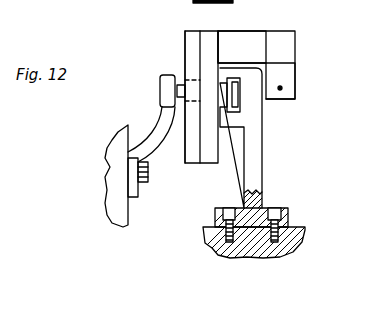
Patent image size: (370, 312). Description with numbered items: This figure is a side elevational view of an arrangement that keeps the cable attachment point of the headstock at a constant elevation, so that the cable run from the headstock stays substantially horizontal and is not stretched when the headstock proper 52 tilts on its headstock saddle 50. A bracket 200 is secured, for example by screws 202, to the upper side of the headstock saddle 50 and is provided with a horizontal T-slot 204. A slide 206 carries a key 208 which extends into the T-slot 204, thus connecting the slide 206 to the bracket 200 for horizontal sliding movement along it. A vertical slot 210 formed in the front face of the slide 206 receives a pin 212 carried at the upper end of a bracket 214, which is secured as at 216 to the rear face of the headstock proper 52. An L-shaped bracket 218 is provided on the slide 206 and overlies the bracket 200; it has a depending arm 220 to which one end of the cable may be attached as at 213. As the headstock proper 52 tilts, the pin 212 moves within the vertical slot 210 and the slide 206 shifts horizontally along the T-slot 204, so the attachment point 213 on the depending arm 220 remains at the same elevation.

The headstock saddle 50 is at (293, 251).
The headstock proper 52 is at (112, 153).
The bracket 200 is at (263, 173).
The screws 202 is at (232, 208).
The T-slot 204 is at (239, 102).
The slide 206 is at (210, 31).
The key 208 is at (230, 90).
The vertical slot 210 is at (185, 43).
The pin 212 is at (182, 85).
The cable attachment point 213 is at (283, 87).
The bracket 214 is at (160, 89).
The securing means 216 is at (146, 184).
The L-shaped bracket 218 is at (259, 14).
The depending arm 220 is at (297, 62).